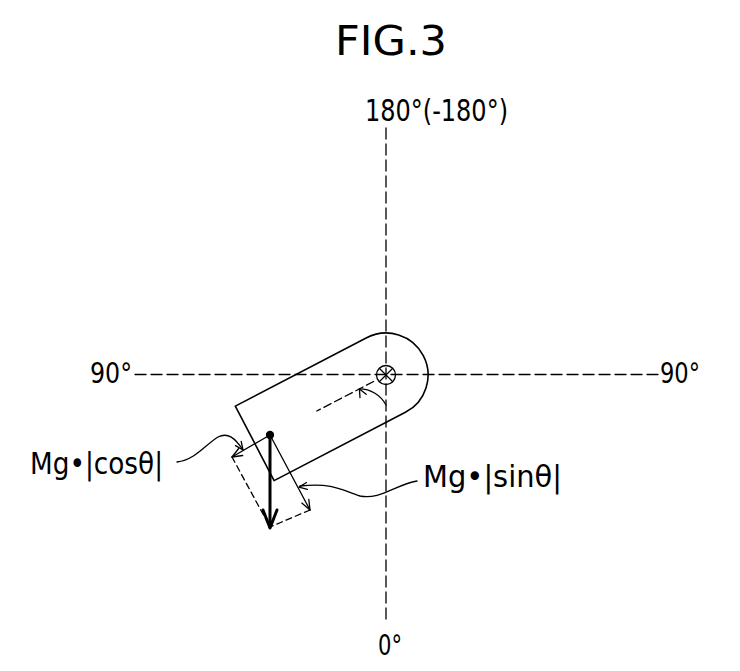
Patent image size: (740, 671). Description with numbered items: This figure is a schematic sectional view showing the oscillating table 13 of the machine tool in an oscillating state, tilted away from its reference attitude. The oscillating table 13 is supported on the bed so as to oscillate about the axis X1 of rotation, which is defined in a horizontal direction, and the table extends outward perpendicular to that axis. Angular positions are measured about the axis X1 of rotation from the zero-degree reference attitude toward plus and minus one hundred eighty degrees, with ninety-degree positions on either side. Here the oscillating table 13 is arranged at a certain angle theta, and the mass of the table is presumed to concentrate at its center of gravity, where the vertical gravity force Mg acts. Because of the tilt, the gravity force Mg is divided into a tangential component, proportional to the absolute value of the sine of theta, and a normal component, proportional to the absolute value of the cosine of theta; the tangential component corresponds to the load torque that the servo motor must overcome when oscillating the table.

The oscillating table 13 is at (340, 352).
The axis of rotation X1 is at (396, 372).
The gravity force Mg is at (271, 501).